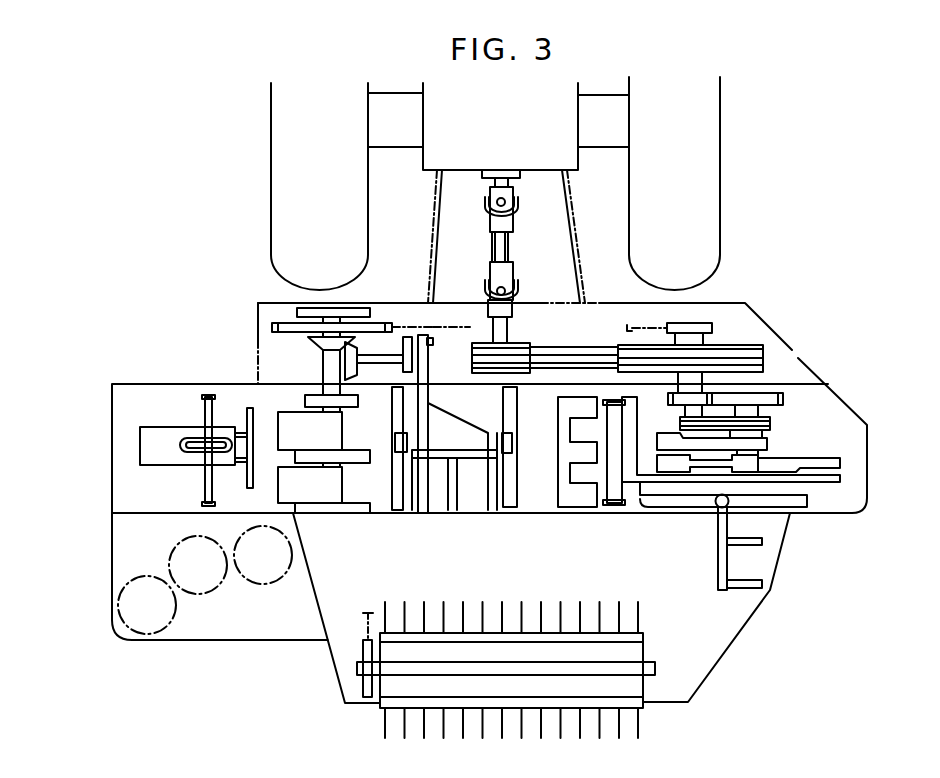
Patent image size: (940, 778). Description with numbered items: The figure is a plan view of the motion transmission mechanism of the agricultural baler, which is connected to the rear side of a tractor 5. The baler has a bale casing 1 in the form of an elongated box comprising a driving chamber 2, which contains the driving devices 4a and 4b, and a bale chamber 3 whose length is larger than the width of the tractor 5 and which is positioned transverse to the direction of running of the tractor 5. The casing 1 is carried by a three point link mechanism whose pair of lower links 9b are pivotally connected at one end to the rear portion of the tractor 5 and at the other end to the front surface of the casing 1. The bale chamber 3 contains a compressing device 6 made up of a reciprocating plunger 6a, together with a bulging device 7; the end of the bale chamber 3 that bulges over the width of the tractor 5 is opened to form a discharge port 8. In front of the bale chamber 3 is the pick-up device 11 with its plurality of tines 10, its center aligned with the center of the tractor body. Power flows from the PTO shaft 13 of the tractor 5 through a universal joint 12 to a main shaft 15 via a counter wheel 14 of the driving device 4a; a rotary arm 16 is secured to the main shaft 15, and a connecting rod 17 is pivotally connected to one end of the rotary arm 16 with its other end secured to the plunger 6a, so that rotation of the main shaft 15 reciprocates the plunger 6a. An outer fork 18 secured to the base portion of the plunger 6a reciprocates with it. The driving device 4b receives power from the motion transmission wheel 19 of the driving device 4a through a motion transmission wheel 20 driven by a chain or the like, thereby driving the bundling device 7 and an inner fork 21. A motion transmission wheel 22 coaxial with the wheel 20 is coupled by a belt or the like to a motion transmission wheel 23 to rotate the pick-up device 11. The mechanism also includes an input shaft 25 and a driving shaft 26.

The bale casing 1 is at (793, 325).
The driving chamber 2 is at (742, 328).
The bale chamber 3 is at (838, 417).
The driving device 4a is at (576, 352).
The driving device 4b is at (382, 303).
The tractor 5 is at (615, 127).
The compressing device 6 is at (555, 513).
The reciprocating plunger 6a is at (597, 495).
The bulging device 7 is at (290, 417).
The discharge port 8 is at (112, 453).
The lower links 9b is at (432, 218).
The tines 10 is at (638, 730).
The pick-up device 11 is at (627, 683).
The universal joint 12 is at (502, 248).
The PTO shaft 13 is at (510, 181).
The counter wheel 14 is at (763, 363).
The main shaft 15 is at (752, 408).
The rotary arm 16 is at (833, 462).
The connecting rod 17 is at (818, 482).
The outer fork 18 is at (750, 547).
The motion transmission wheel 19 is at (692, 323).
The motion transmission wheel 20 is at (272, 330).
The inner fork 21 is at (413, 512).
The motion transmission wheel 22 is at (297, 312).
The motion transmission wheel 23 is at (363, 688).
The input shaft 25 is at (500, 330).
The driving shaft 26 is at (335, 410).